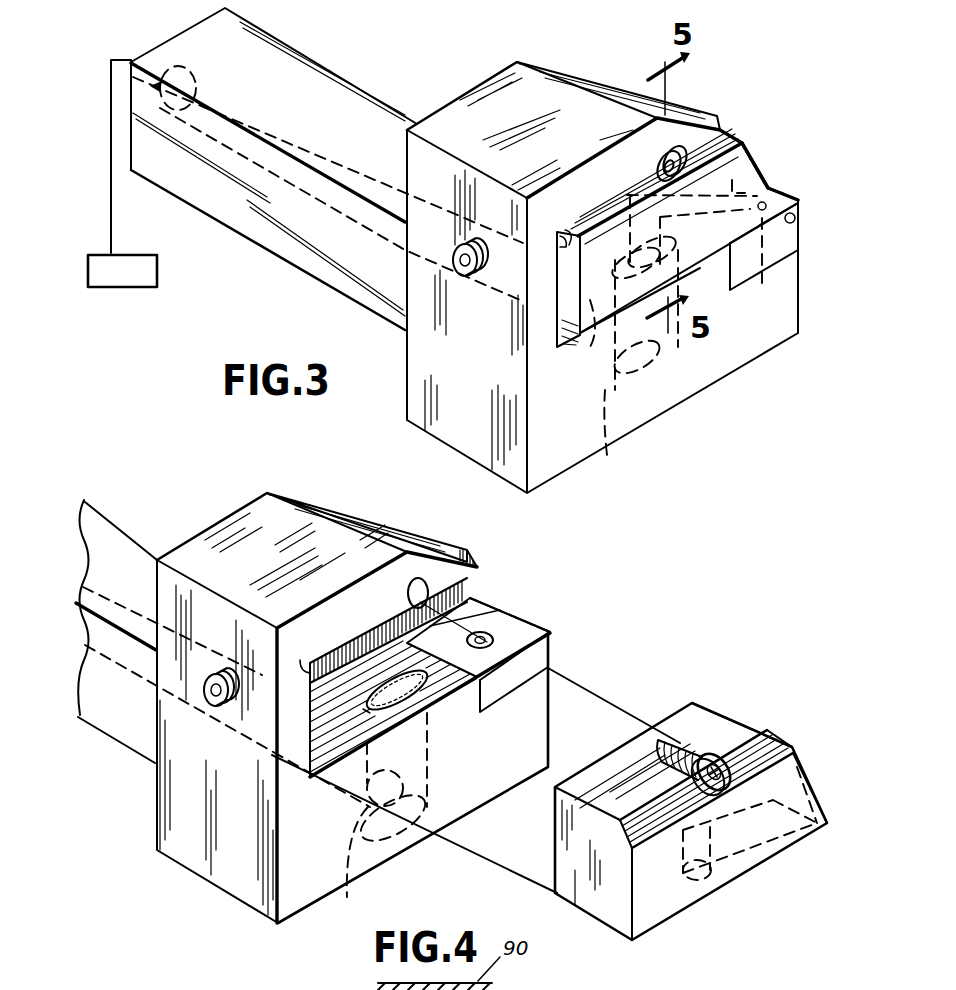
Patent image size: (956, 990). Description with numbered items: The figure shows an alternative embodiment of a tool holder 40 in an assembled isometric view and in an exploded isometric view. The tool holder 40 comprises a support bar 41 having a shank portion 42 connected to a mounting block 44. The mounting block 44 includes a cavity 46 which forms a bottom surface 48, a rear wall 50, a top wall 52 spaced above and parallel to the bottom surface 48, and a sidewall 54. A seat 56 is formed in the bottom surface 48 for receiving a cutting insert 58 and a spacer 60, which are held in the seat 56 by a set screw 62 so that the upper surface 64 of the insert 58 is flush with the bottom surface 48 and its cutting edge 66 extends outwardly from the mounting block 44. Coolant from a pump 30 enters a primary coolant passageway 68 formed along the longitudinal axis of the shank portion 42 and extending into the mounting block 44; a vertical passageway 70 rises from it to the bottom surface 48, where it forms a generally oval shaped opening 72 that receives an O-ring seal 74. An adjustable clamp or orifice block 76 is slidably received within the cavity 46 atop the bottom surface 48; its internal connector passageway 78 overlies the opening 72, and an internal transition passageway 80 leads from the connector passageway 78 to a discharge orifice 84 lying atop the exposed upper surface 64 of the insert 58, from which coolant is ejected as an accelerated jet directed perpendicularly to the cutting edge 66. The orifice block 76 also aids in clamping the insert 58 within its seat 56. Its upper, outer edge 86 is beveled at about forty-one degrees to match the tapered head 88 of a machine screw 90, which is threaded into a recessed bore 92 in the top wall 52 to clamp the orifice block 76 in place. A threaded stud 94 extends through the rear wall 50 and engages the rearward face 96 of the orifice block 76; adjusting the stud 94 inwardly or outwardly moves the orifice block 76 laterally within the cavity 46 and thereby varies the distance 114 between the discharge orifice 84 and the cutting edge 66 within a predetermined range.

In FIG. 3, the pump 30 is at (106, 299).
In FIG. 3, the tool holder 40 is at (707, 51).
In FIG. 4, the tool holder 40 is at (688, 581).
In FIG. 3, the support bar 41 is at (418, 94).
In FIG. 4, the support bar 41 is at (177, 527).
In FIG. 3, the shank portion 42 is at (340, 72).
In FIG. 4, the shank portion 42 is at (142, 520).
In FIG. 3, the mounting block 44 is at (516, 62).
In FIG. 4, the mounting block 44 is at (268, 493).
In FIG. 3, the cavity 46 is at (556, 328).
In FIG. 4, the cavity 46 is at (512, 583).
In FIG. 3, the bottom surface 48 is at (575, 342).
In FIG. 4, the bottom surface 48 is at (445, 828).
In FIG. 3, the rear wall 50 is at (566, 240).
In FIG. 4, the rear wall 50 is at (299, 655).
In FIG. 3, the top wall 52 is at (600, 217).
In FIG. 4, the top wall 52 is at (350, 650).
In FIG. 3, the sidewall 54 is at (722, 118).
In FIG. 4, the sidewall 54 is at (467, 549).
In FIG. 3, the seat 56 is at (780, 243).
In FIG. 4, the seat 56 is at (500, 712).
In FIG. 3, the cutting insert 58 is at (750, 249).
In FIG. 4, the cutting insert 58 is at (548, 651).
In FIG. 3, the spacer 60 is at (797, 247).
In FIG. 4, the spacer 60 is at (523, 690).
In FIG. 4, the set screw 62 is at (468, 643).
In FIG. 3, the upper surface 64 is at (783, 190).
In FIG. 4, the upper surface 64 is at (507, 623).
In FIG. 3, the cutting edge 66 is at (773, 187).
In FIG. 4, the cutting edge 66 is at (540, 625).
In FIG. 3, the primary coolant passageway 68 is at (252, 100).
In FIG. 4, the primary coolant passageway 68 is at (90, 590).
In FIG. 3, the vertical passageway 70 is at (607, 455).
In FIG. 4, the vertical passageway 70 is at (350, 890).
In FIG. 3, the oval shaped opening 72 is at (582, 375).
In FIG. 4, the oval shaped opening 72 is at (388, 697).
In FIG. 3, the O-ring seal 74 is at (622, 280).
In FIG. 4, the O-ring seal 74 is at (403, 700).
In FIG. 3, the orifice block 76 is at (754, 151).
In FIG. 4, the orifice block 76 is at (729, 699).
In FIG. 3, the connector passageway 78 is at (632, 240).
In FIG. 4, the connector passageway 78 is at (706, 801).
In FIG. 3, the transition passageway 80 is at (696, 211).
In FIG. 4, the transition passageway 80 is at (810, 762).
In FIG. 3, the discharge orifice 84 is at (762, 265).
In FIG. 4, the discharge orifice 84 is at (815, 830).
In FIG. 3, the upper, outer edge 86 is at (745, 138).
In FIG. 4, the upper, outer edge 86 is at (760, 735).
In FIG. 4, the tapered head 88 is at (720, 755).
In FIG. 3, the machine screw 90 is at (672, 154).
In FIG. 4, the machine screw 90 is at (672, 743).
In FIG. 4, the recessed bore 92 is at (407, 595).
In FIG. 3, the threaded stud 94 is at (477, 245).
In FIG. 4, the threaded stud 94 is at (217, 712).
In FIG. 3, the rearward face 96 is at (573, 332).
In FIG. 4, the rearward face 96 is at (610, 898).
In FIG. 3, the distance 114 is at (780, 218).